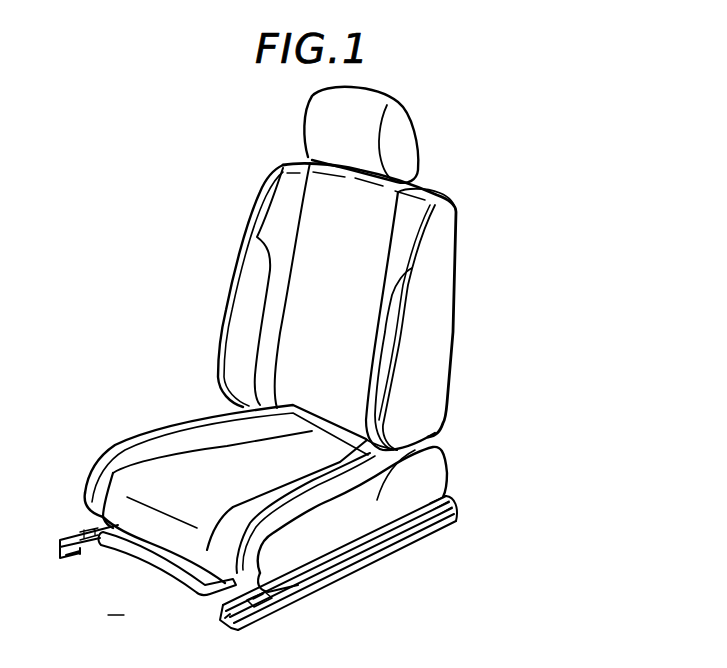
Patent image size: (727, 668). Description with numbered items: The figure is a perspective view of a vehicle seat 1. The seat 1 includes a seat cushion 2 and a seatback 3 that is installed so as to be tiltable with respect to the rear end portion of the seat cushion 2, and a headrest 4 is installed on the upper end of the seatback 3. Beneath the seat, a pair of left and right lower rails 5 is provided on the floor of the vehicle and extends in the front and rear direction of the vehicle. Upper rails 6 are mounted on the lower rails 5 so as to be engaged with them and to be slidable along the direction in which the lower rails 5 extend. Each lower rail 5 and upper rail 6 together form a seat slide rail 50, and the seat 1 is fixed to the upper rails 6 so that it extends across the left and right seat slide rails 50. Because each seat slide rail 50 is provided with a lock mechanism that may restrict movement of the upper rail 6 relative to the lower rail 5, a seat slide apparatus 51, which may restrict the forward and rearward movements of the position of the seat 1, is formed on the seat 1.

The seat 1 is at (540, 162).
The seat cushion 2 is at (192, 468).
The seatback 3 is at (438, 293).
The headrest 4 is at (403, 140).
The lower rail 5 is at (443, 493).
The upper rail 6 is at (357, 569).
The seat slide rail 50 is at (383, 546).
The seat slide apparatus 51 is at (402, 561).